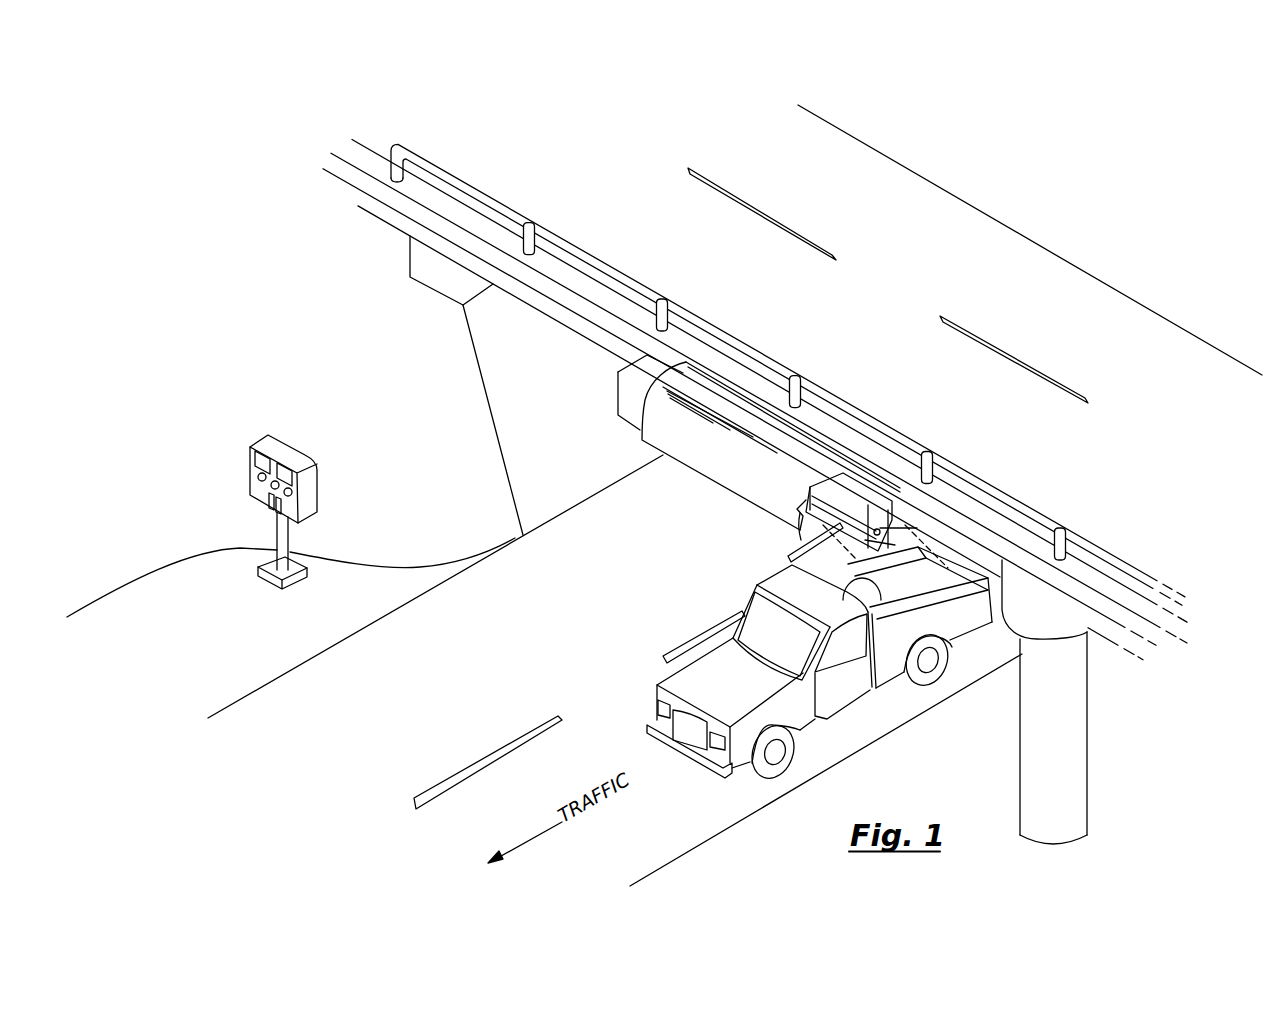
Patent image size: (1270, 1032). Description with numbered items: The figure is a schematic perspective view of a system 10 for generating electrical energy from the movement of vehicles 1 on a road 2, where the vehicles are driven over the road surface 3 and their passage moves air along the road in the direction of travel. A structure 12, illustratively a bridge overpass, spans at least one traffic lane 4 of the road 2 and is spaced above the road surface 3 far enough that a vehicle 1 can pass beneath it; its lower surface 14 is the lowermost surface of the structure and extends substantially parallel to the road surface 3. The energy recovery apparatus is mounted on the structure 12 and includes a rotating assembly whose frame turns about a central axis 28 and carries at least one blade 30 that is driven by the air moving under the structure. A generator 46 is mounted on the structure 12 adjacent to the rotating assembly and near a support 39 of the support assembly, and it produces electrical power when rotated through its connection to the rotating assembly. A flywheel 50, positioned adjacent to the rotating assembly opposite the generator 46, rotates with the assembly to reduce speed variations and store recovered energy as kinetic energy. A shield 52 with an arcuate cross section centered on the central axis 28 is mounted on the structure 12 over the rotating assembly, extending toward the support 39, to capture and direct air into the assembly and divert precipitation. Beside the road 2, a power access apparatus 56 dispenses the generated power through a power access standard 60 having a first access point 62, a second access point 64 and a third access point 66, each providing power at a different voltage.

The vehicle 1 is at (828, 722).
The road 2 is at (832, 776).
The road surface 3 is at (715, 823).
The traffic lane 4 is at (689, 824).
The system 10 is at (870, 392).
The structure 12 is at (1056, 584).
The lower surface 14 is at (1060, 616).
The central axis 28 is at (930, 553).
The blade 30 is at (828, 527).
The support 39 is at (893, 540).
The generator 46 is at (628, 388).
The flywheel 50 is at (897, 500).
The shield 52 is at (753, 483).
The power access apparatus 56 is at (290, 470).
The power access standard 60 is at (315, 497).
The first access point 62 is at (258, 476).
The second access point 64 is at (272, 487).
The third access point 66 is at (292, 490).